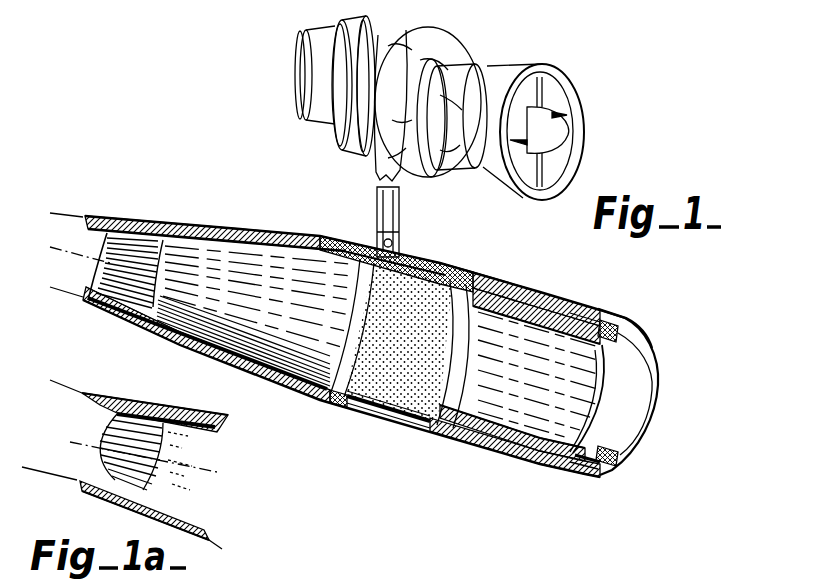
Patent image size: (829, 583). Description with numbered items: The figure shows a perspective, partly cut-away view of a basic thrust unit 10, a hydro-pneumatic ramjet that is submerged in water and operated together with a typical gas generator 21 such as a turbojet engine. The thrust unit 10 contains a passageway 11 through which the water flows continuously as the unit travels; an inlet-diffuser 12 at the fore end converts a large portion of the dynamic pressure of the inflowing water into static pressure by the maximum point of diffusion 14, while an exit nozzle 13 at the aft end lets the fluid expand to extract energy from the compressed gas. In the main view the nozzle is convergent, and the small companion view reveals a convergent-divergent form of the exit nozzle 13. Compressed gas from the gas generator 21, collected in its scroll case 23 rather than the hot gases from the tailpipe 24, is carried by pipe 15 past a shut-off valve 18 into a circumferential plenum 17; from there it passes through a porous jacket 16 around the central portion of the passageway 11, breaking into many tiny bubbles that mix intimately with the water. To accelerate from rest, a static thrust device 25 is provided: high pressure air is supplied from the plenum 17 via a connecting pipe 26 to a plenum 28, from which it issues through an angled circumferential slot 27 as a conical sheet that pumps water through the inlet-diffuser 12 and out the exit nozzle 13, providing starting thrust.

The thrust unit 10 is at (477, 452).
The passageway 11 is at (508, 362).
The inlet-diffuser 12 is at (640, 373).
The exit nozzle 13 is at (185, 268).
The maximum point of diffusion 14 is at (410, 357).
The pipe 15 is at (398, 206).
The porous jacket 16 is at (428, 320).
The circumferential plenum 17 is at (440, 268).
The shut-off valve 18 is at (377, 235).
The gas generator 21 is at (480, 72).
The scroll case 23 is at (445, 42).
The tailpipe 24 is at (316, 102).
The static thrust device 25 is at (610, 313).
The connecting pipe 26 is at (627, 353).
The circumferential slot 27 is at (625, 420).
The plenum 28 is at (595, 470).